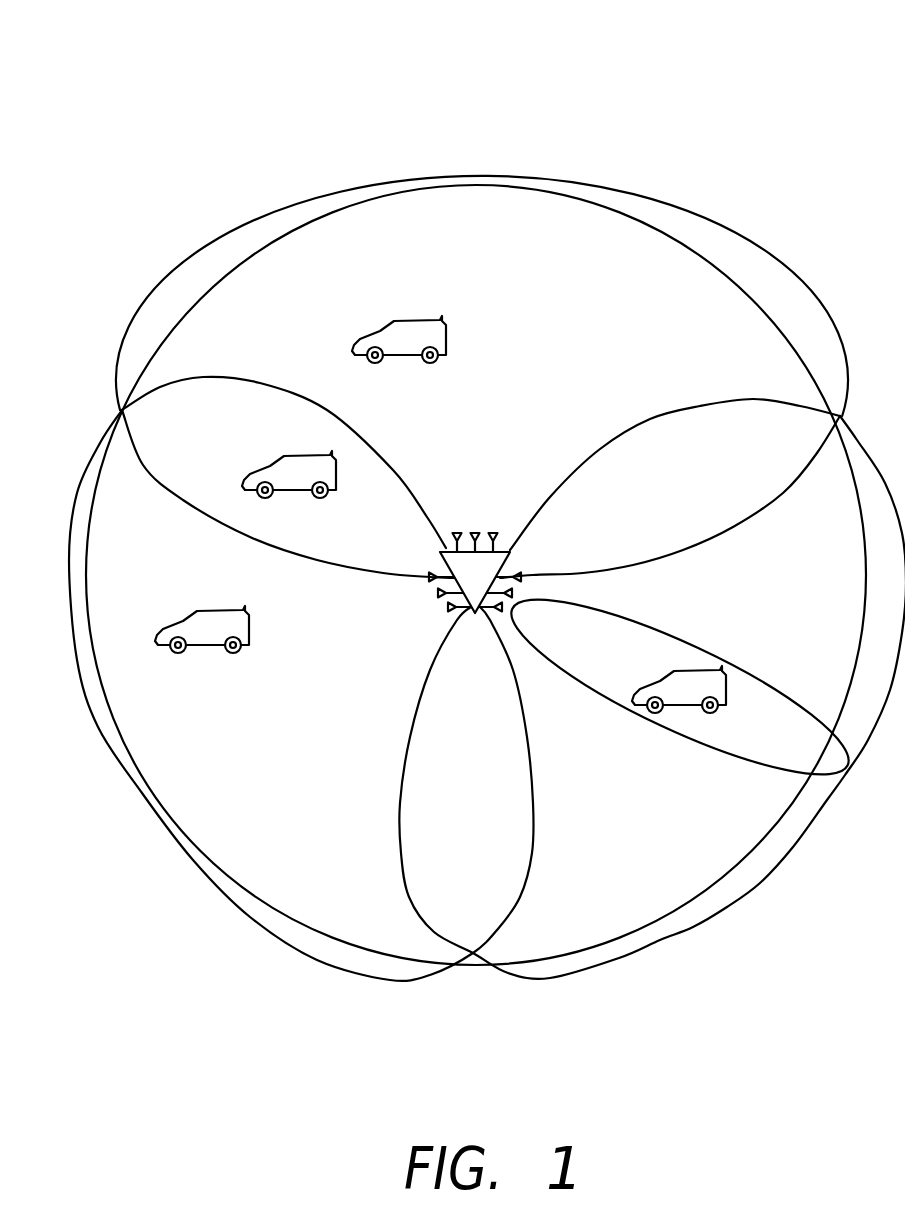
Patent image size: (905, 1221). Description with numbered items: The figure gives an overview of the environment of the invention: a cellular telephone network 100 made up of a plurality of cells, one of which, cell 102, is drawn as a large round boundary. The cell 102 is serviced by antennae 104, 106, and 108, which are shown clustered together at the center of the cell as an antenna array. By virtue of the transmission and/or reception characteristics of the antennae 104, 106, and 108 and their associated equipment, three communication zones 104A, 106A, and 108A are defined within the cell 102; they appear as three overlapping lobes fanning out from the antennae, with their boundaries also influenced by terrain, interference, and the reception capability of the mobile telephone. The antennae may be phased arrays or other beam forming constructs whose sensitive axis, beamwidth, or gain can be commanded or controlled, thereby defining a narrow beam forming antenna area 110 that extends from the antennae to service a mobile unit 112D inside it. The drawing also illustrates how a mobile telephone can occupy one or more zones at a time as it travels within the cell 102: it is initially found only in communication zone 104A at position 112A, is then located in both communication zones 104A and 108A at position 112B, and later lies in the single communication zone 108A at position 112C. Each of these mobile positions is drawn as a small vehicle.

The cellular telephone network 100 is at (690, 72).
The cellular telephone cell 102 is at (472, 968).
The antenna 104 is at (504, 563).
The communication zone 104A is at (740, 230).
The antenna 106 is at (548, 588).
The communication zone 106A is at (767, 871).
The antenna 108 is at (420, 602).
The communication zone 108A is at (257, 933).
The beam forming antenna area 110 is at (732, 752).
The mobile cellular telephone position 112A is at (418, 318).
The mobile cellular telephone position 112B is at (303, 455).
The mobile cellular telephone position 112C is at (213, 647).
The mobile unit 112D is at (697, 667).